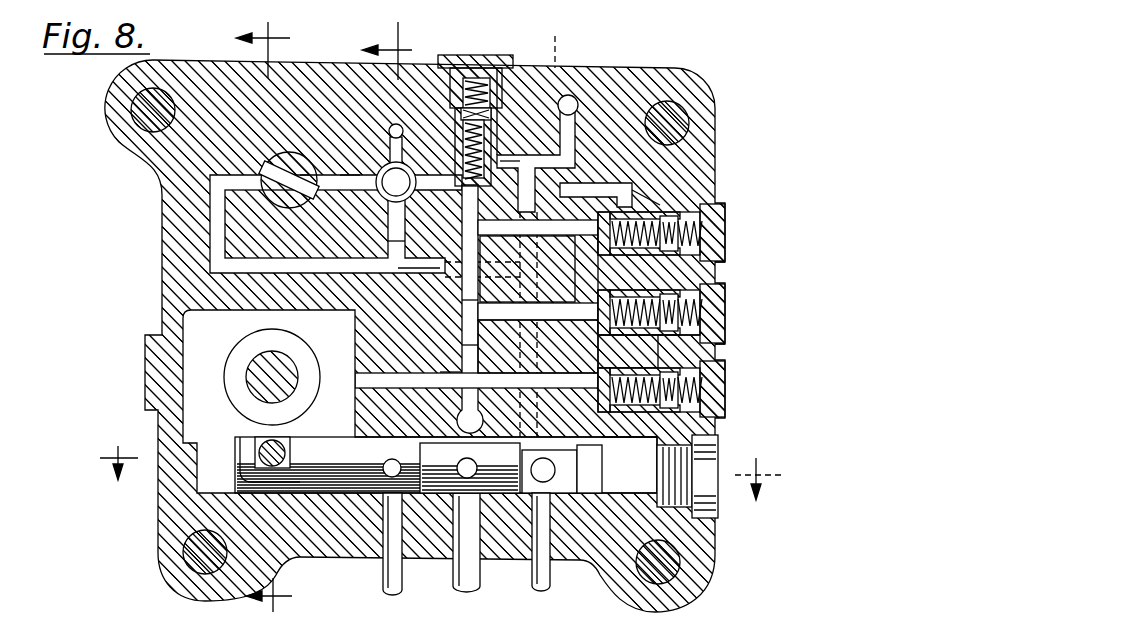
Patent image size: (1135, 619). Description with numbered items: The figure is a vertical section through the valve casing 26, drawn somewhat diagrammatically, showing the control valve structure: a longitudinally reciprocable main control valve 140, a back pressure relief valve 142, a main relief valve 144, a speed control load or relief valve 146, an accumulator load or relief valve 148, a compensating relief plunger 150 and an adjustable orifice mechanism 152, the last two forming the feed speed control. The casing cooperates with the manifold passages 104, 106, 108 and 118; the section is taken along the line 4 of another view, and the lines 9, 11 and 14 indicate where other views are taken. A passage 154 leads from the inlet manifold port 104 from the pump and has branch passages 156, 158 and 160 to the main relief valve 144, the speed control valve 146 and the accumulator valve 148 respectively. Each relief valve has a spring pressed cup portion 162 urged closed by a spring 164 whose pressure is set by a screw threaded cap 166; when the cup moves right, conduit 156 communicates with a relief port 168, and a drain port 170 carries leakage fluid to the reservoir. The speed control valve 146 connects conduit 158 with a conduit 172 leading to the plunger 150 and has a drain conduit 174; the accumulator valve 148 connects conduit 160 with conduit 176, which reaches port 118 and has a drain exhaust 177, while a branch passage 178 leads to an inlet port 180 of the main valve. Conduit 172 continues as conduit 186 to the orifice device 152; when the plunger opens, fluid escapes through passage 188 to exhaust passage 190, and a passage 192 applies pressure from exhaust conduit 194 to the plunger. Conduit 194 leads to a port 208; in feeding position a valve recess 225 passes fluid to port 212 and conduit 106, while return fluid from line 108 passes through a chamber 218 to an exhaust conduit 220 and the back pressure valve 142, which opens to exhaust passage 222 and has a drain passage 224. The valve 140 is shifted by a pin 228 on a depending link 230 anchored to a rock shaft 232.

The passage 4 is at (411, 272).
The section line 9- 9 is at (405, 317).
The section line 11- 11 is at (442, 463).
The section line 14- 14 is at (387, 51).
The valve casing 26 is at (172, 218).
The inlet manifold port 104 is at (452, 414).
The conduit 106 is at (552, 578).
The return line 108 is at (383, 578).
The port 118 is at (580, 54).
The main control valve 140 is at (332, 494).
The back pressure relief valve 142 is at (727, 398).
The main relief valve 144 is at (727, 318).
The speed control load or relief valve 146 is at (727, 238).
The accumulator load or relief valve 148 is at (482, 58).
The compensating relief plunger 150 is at (352, 175).
The adjustable orifice mechanism 152 is at (280, 165).
The passage 154 is at (462, 310).
The branch passage 156 is at (462, 336).
The branch passage 158 is at (540, 234).
The branch passage 160 is at (463, 212).
The cup portion 162 is at (619, 269).
The spring 164 is at (672, 348).
The screw threaded cap 166 is at (727, 346).
The relief port 168 is at (628, 351).
The drain port 170 is at (722, 264).
The conduit 172 is at (625, 190).
The drain conduit 174 is at (670, 207).
The conduit 176 is at (513, 158).
The drain exhaust 177 is at (556, 125).
The branch passage 178 is at (568, 342).
The inlet port 180 is at (452, 498).
The conduit 186 is at (306, 172).
The passage 188 is at (404, 168).
The exhaust passage 190 is at (399, 124).
The passage 192 is at (392, 241).
The exhaust conduit 194 is at (257, 272).
The port 208 is at (569, 471).
The port 212 is at (555, 498).
The chamber 218 is at (348, 336).
The exhaust conduit 220 is at (441, 370).
The exhaust passage 222 is at (629, 427).
The drain passage 224 is at (720, 440).
The valve recess 225 is at (648, 506).
The pin 228 is at (287, 455).
The depending link 230 is at (250, 432).
The rock shaft 232 is at (302, 406).